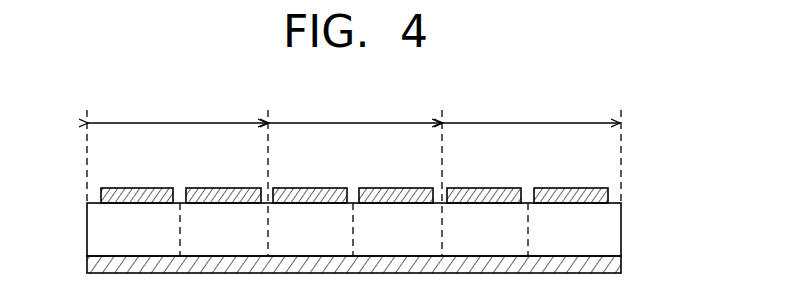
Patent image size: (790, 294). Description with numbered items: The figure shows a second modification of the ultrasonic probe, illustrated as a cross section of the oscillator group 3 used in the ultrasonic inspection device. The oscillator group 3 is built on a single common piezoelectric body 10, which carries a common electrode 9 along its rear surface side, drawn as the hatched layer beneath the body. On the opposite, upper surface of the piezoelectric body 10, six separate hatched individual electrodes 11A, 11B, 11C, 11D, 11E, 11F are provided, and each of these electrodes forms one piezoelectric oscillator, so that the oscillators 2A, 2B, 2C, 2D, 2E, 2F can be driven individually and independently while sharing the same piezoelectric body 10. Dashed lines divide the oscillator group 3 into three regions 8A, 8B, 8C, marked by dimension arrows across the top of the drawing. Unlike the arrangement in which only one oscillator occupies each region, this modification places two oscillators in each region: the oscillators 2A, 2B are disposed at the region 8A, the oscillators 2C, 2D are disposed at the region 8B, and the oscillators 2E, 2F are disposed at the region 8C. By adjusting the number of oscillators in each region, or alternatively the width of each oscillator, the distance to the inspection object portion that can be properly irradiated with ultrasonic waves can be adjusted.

The oscillator group 3 is at (359, 185).
The common electrode 9 is at (621, 263).
The piezoelectric body 10 is at (105, 237).
The oscillator 2A is at (160, 230).
The oscillator 2B is at (247, 230).
The oscillator 2C is at (332, 230).
The oscillator 2D is at (417, 230).
The oscillator 2E is at (505, 230).
The oscillator 2F is at (592, 230).
The region 8A is at (177, 108).
The region 8B is at (355, 108).
The region 8C is at (531, 108).
The individual electrode 11A is at (125, 188).
The individual electrode 11B is at (213, 188).
The individual electrode 11C is at (303, 188).
The individual electrode 11D is at (388, 188).
The individual electrode 11E is at (475, 188).
The individual electrode 11F is at (558, 188).